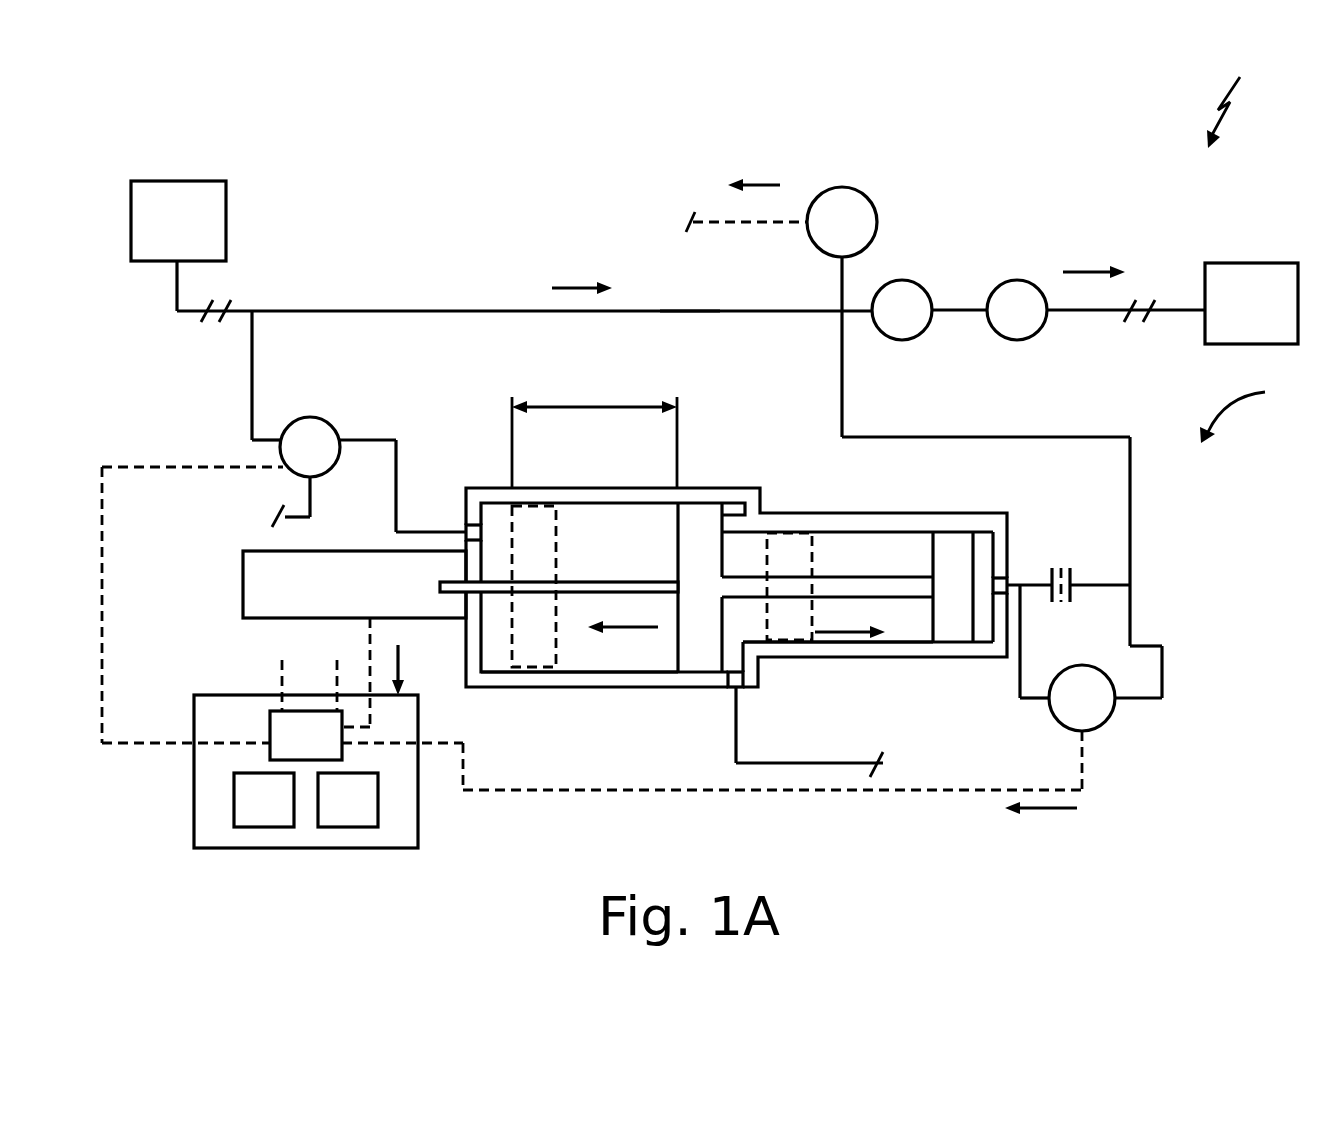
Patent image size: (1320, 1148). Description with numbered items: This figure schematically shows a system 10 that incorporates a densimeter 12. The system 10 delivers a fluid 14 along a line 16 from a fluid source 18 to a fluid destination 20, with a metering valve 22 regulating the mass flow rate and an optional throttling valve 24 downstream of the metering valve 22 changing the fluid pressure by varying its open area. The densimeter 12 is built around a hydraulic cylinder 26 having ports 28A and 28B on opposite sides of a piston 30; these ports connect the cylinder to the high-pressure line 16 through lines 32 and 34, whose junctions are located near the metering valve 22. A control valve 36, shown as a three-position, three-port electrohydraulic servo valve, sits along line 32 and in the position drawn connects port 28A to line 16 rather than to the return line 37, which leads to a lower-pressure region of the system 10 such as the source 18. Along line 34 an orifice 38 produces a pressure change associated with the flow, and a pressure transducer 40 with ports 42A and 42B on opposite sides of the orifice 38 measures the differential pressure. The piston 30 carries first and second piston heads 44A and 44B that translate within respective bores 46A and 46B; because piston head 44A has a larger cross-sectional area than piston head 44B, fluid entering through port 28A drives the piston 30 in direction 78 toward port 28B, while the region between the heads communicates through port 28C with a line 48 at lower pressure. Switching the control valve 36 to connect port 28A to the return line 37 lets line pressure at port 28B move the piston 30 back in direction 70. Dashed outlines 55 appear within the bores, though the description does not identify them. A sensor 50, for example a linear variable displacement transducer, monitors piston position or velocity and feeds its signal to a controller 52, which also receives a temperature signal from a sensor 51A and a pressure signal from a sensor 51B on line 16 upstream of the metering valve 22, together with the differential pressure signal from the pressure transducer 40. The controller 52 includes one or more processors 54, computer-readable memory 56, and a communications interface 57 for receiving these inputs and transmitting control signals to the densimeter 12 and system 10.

The system 10 is at (1236, 97).
The densimeter 12 is at (1249, 410).
The fluid 14 is at (582, 277).
The line 16 is at (442, 307).
The fluid source 18 is at (178, 246).
The fluid destination 20 is at (1251, 303).
The metering valve 22 is at (902, 310).
The throttling valve 24 is at (1017, 310).
The hydraulic cylinder 26 is at (625, 487).
The port 28A is at (470, 525).
The port 28B is at (998, 583).
The port 28C is at (730, 683).
The piston 30 is at (652, 577).
The line 32 is at (397, 437).
The line 34 is at (1028, 437).
The control valve 36 is at (323, 420).
The return line 37 is at (313, 483).
The orifice 38 is at (1063, 562).
The pressure transducer 40 is at (1082, 727).
The port 42A is at (1045, 698).
The port 42B is at (1117, 698).
The first piston head 44A is at (722, 557).
The second piston head 44B is at (933, 557).
The bore 46A is at (590, 670).
The bore 46B is at (920, 642).
The line 48 is at (803, 758).
The sensor 50 is at (354, 584).
The sensor 51A is at (868, 192).
The sensor 51B is at (348, 663).
The controller 52 is at (223, 693).
The processor 54 is at (264, 800).
The piston alternate position 55 is at (510, 532).
The computer-readable memory 56 is at (348, 800).
The communications interface 57 is at (306, 735).
The direction 70 is at (623, 614).
The direction 78 is at (850, 619).